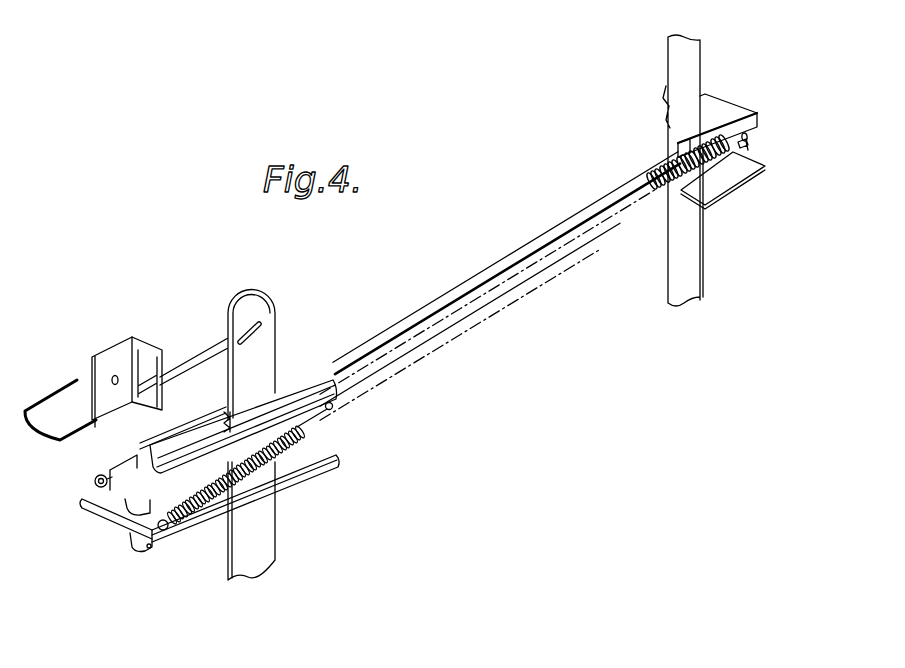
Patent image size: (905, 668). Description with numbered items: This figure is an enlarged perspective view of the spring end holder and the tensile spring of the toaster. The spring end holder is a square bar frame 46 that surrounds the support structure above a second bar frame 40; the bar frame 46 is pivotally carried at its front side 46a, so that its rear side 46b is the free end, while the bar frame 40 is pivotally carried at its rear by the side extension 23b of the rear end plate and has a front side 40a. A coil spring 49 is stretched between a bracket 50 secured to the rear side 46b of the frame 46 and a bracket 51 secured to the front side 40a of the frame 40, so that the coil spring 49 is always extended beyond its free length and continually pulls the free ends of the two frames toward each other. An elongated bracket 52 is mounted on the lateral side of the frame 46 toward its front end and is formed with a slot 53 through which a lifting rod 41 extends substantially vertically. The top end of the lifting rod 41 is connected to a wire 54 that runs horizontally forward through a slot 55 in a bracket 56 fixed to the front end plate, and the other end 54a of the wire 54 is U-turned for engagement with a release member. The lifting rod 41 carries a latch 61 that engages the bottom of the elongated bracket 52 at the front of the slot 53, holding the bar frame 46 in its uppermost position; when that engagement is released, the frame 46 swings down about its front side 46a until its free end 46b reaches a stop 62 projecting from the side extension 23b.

The side extension 23b is at (680, 247).
The lifting rod 41 is at (273, 530).
The bracket 50 is at (738, 113).
The rear side 46b is at (707, 96).
The stop 62 is at (722, 180).
The bar frame 46 is at (416, 318).
The coil spring 49 is at (462, 318).
The wire 54 is at (205, 338).
The slot 53 is at (264, 350).
The elongated bracket 52 is at (303, 381).
The latch 61 is at (225, 412).
The bracket 56 is at (115, 360).
The slot 55 is at (146, 352).
The U-turned end 54a is at (38, 432).
The front side 46a is at (95, 482).
The front side 40a is at (100, 518).
The bar frame 40 is at (292, 481).
The bracket 51 is at (158, 538).